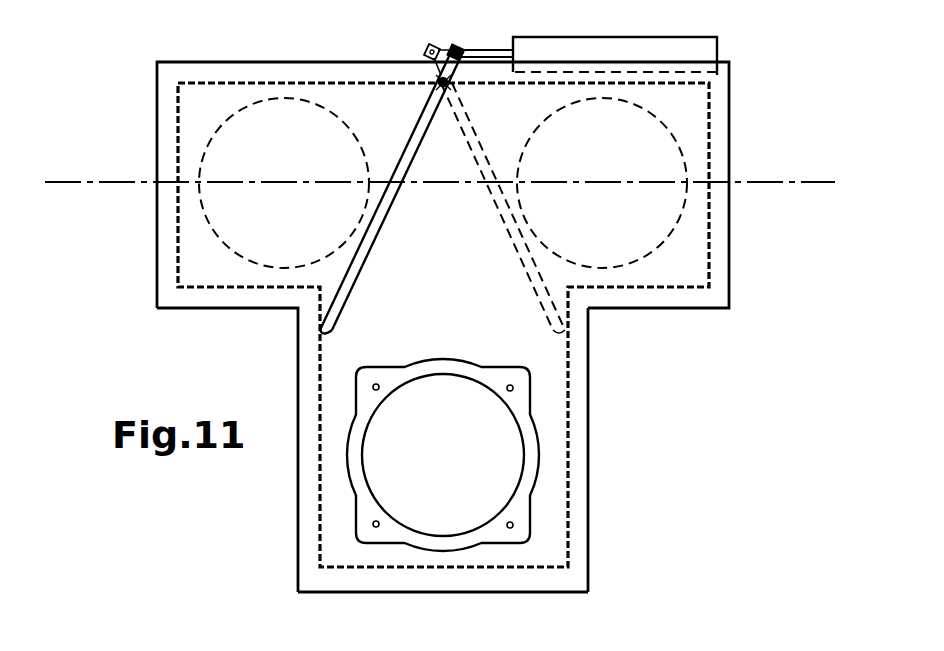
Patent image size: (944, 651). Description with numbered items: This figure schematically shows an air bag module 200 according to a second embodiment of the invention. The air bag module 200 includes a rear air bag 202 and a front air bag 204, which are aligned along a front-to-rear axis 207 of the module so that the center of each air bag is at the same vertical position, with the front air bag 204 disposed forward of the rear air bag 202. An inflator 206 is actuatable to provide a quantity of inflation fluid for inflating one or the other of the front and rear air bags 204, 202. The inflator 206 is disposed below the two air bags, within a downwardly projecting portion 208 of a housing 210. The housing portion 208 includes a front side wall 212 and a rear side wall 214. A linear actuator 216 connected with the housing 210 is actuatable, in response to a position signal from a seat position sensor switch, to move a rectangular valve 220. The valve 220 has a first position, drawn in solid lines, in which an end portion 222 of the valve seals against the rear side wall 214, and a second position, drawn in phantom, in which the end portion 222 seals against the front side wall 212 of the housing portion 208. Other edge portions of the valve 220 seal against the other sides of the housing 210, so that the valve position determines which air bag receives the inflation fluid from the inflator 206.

The air bag module 200 is at (165, 334).
The rear air bag 202 is at (220, 126).
The front air bag 204 is at (690, 249).
The inflator 206 is at (540, 456).
The front-to-rear axis 207 is at (126, 182).
The downwardly projecting portion 208 is at (589, 514).
The housing 210 is at (661, 309).
The front side wall 212 is at (588, 400).
The rear side wall 214 is at (297, 343).
The linear actuator 216 is at (640, 37).
The valve 220 is at (378, 232).
The end portion 222 is at (334, 326).